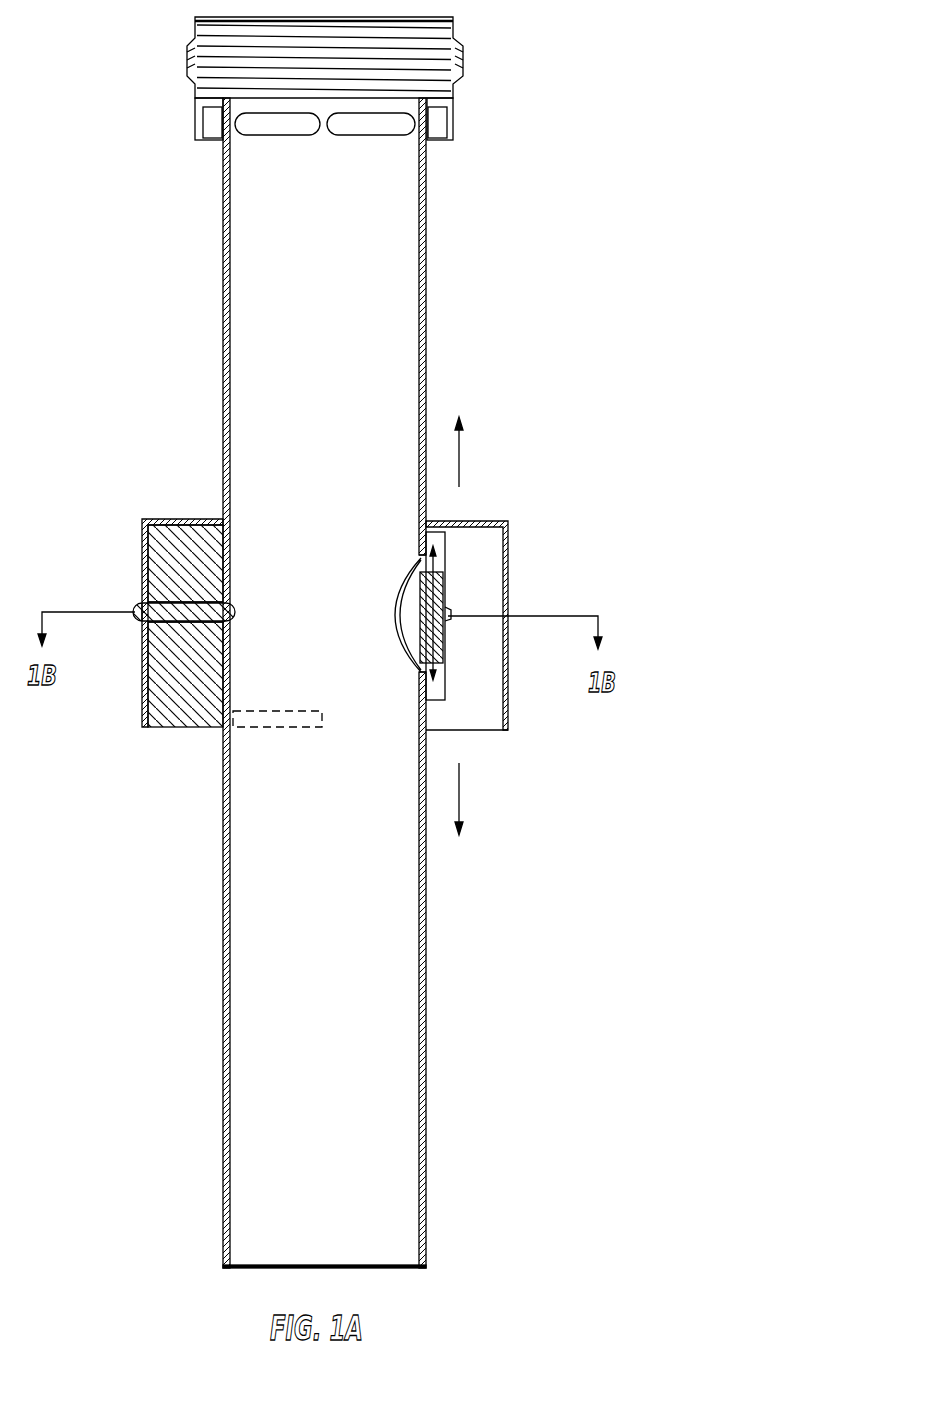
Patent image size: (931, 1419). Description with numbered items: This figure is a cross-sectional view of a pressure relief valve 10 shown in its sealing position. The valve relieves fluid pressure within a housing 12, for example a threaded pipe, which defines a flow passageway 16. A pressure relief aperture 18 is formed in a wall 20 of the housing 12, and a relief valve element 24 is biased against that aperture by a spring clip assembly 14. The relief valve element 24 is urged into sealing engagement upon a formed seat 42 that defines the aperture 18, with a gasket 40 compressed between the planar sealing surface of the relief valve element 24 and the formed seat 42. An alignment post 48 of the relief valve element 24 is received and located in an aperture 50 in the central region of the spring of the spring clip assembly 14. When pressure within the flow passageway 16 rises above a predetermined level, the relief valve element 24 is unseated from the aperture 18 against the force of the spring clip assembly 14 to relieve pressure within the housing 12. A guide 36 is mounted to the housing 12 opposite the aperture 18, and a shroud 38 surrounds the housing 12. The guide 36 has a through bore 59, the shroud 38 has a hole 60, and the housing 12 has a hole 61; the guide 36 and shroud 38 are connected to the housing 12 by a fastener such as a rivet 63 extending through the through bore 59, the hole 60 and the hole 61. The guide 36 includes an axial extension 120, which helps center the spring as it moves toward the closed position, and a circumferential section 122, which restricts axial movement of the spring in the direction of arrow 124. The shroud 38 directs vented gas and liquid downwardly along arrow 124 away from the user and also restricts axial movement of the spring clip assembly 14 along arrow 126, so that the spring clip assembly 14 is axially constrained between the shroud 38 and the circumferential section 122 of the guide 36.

The pressure relief valve 10 is at (605, 437).
The housing 12 is at (425, 318).
The spring clip assembly 14 is at (445, 685).
The flow passageway 16 is at (332, 279).
The pressure relief aperture 18 is at (410, 615).
The wall 20 is at (420, 833).
The relief valve element 24 is at (445, 585).
The guide 36 is at (153, 697).
The shroud 38 is at (507, 530).
The gasket 40 is at (430, 678).
The formed seat 42 is at (423, 553).
The alignment post 48 is at (452, 620).
The aperture 50 is at (448, 610).
The through bore 59 is at (195, 603).
The hole 60 is at (138, 602).
The hole 61 is at (228, 605).
The rivet 63 is at (135, 608).
The axial extension 120 is at (180, 722).
The circumferential section 122 is at (272, 730).
The arrow 124 is at (459, 800).
The arrow 126 is at (459, 463).